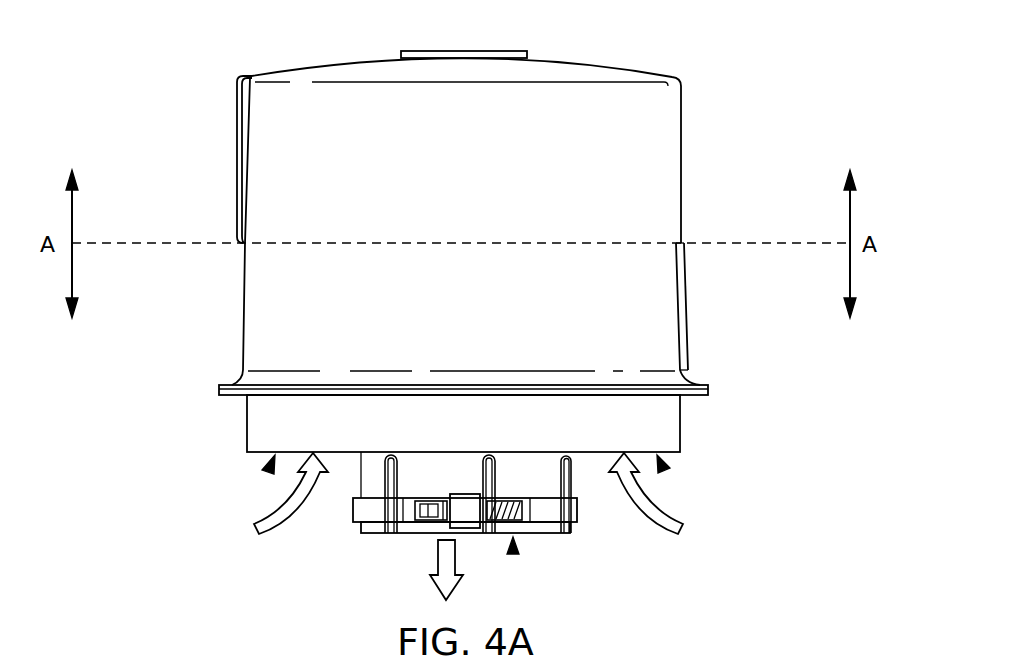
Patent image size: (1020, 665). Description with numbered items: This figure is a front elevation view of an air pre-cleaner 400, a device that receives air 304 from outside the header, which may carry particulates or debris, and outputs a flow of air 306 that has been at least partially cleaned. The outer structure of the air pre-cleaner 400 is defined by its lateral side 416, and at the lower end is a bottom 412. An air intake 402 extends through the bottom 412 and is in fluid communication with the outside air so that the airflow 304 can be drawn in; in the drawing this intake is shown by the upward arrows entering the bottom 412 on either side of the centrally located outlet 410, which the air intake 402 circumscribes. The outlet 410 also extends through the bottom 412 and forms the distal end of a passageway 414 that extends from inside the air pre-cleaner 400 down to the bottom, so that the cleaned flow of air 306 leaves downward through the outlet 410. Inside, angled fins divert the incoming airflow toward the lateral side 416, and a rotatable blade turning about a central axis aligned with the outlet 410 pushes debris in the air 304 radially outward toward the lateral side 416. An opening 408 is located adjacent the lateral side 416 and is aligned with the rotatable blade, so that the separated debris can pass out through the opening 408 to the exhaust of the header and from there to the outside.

The air pre-cleaner 400 is at (750, 78).
The air intake 402 is at (268, 468).
The air 304 is at (276, 538).
The flow of air 306 is at (436, 562).
The opening 408 is at (245, 127).
The outlet 410 is at (516, 550).
The bottom 412 is at (245, 432).
The passageway 414 is at (545, 482).
The lateral side 416 is at (268, 302).